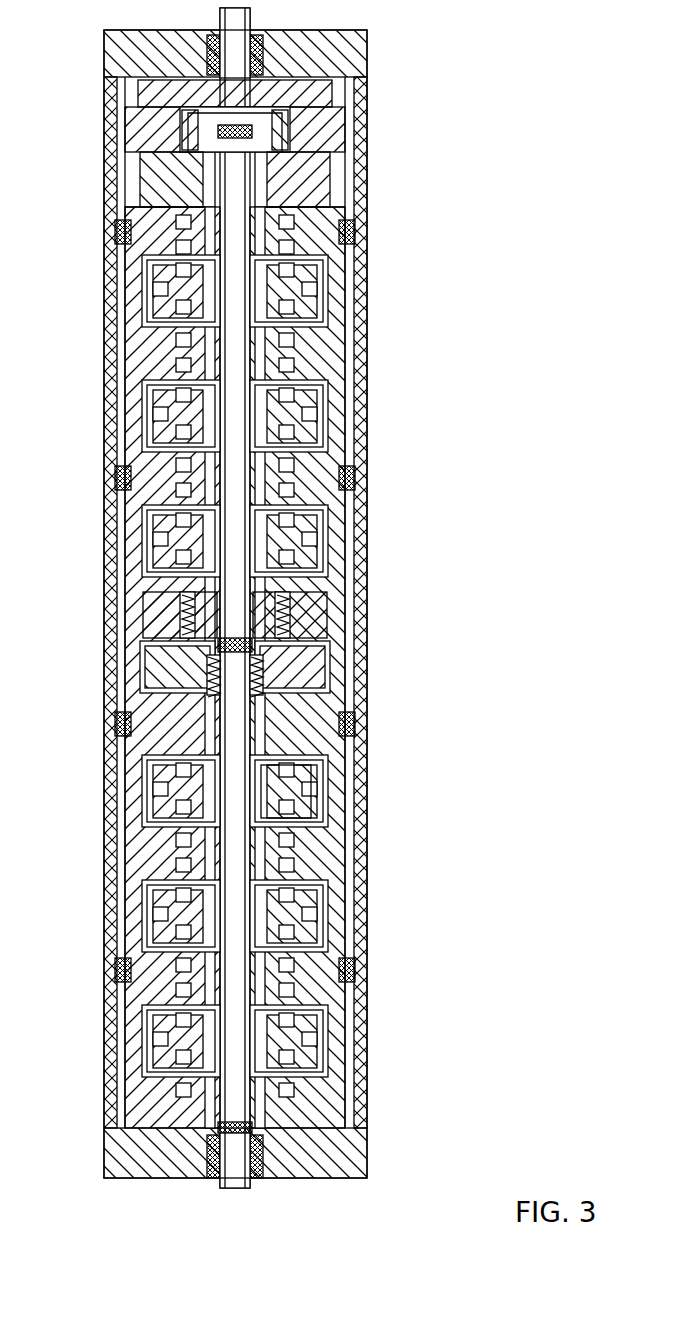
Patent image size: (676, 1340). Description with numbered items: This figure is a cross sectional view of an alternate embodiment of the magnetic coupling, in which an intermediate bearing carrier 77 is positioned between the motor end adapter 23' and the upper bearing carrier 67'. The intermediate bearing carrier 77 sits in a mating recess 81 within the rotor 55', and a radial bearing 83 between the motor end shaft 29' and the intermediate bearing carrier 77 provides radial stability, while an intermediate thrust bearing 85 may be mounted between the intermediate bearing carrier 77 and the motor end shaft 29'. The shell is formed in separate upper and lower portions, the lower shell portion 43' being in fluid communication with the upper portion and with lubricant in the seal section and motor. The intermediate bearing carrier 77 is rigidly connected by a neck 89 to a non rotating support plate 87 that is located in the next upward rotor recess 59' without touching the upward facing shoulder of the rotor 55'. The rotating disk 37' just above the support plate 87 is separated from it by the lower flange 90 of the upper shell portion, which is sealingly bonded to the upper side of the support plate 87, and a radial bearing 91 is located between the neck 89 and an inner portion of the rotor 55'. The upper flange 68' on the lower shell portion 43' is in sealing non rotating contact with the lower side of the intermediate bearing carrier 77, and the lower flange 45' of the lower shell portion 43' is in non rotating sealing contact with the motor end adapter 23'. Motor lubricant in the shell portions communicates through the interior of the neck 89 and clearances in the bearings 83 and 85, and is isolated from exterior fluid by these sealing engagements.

The motor end adapter 23' is at (281, 1149).
The lower flange 45' is at (151, 1155).
The rotating disk 37' is at (267, 602).
The rotor recess 59' is at (285, 602).
The rotor 55' is at (178, 667).
The upper bearing carrier 67' is at (285, 124).
The upper flange 68' is at (235, 567).
The lower shell portion 43' is at (286, 926).
The motor end shaft 29' is at (361, 812).
The neck 89 is at (177, 612).
The lower flange 90 is at (181, 598).
The support plate 87 is at (350, 592).
The radial bearing 91 is at (300, 610).
The mating recess 81 is at (160, 650).
The intermediate thrust bearing 85 is at (140, 668).
The intermediate bearing carrier 77 is at (313, 690).
The radial bearing 83 is at (200, 684).